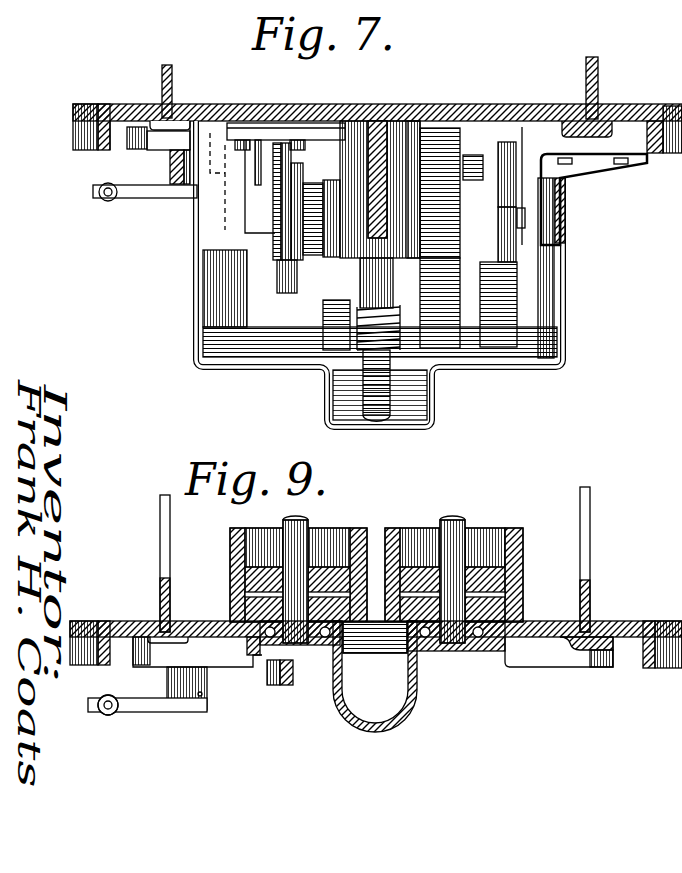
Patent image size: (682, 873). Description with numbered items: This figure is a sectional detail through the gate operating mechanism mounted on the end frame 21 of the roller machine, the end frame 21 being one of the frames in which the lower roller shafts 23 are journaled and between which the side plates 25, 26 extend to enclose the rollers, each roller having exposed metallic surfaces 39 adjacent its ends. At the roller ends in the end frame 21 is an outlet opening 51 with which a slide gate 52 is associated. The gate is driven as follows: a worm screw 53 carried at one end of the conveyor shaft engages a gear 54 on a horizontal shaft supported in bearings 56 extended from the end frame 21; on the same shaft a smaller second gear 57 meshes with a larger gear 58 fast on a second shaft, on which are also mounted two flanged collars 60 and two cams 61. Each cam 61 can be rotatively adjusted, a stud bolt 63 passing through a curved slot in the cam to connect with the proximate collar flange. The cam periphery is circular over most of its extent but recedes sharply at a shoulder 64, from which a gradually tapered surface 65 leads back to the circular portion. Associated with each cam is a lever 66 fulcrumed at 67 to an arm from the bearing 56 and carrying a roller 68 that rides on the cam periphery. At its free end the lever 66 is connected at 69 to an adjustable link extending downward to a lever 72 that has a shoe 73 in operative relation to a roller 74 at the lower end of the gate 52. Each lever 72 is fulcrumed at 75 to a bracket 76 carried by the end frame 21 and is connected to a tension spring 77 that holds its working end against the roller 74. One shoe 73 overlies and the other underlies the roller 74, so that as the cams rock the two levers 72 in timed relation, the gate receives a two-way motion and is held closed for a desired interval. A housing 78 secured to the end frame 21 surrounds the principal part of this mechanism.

In FIG. 7, the end frame 21 is at (113, 104).
In FIG. 9, the end frame 21 is at (126, 621).
In FIG. 7, the lower roller shaft 23 is at (670, 374).
In FIG. 9, the lower roller shaft 23 is at (305, 520).
In FIG. 7, the side plate 25 is at (600, 68).
In FIG. 9, the side plate 25 is at (592, 556).
In FIG. 7, the side plate 26 is at (163, 72).
In FIG. 9, the side plate 26 is at (160, 552).
In FIG. 7, the exposed metallic surface 39 is at (660, 419).
In FIG. 9, the exposed metallic surface 39 is at (232, 540).
In FIG. 9, the outlet opening 51 is at (412, 690).
In FIG. 7, the slide gate 52 is at (372, 121).
In FIG. 9, the slide gate 52 is at (368, 625).
In FIG. 7, the worm screw 53 is at (350, 361).
In FIG. 7, the gear 54 is at (390, 406).
In FIG. 7, the bearing 56 is at (325, 341).
In FIG. 7, the second gear 57 is at (445, 346).
In FIG. 7, the larger gear 58 is at (445, 130).
In FIG. 7, the flanged collar 60 is at (300, 246).
In FIG. 7, the cam 61 is at (280, 263).
In FIG. 7, the stud bolt 63 is at (270, 198).
In FIG. 7, the shoulder 64 is at (505, 284).
In FIG. 7, the tapered surface 65 is at (515, 263).
In FIG. 7, the lever 66 is at (310, 262).
In FIG. 7, the fulcrum 67 is at (330, 276).
In FIG. 7, the roller 68 is at (258, 237).
In FIG. 7, the connection 69 is at (258, 140).
In FIG. 9, the connection 69 is at (280, 685).
In FIG. 7, the lever 72 is at (211, 121).
In FIG. 9, the lever 72 is at (160, 716).
In FIG. 7, the shoe 73 is at (322, 124).
In FIG. 7, the roller 74 is at (417, 121).
In FIG. 7, the fulcrum 75 is at (176, 184).
In FIG. 7, the bracket 76 is at (172, 157).
In FIG. 9, the tension spring 77 is at (110, 716).
In FIG. 7, the housing 78 is at (196, 336).